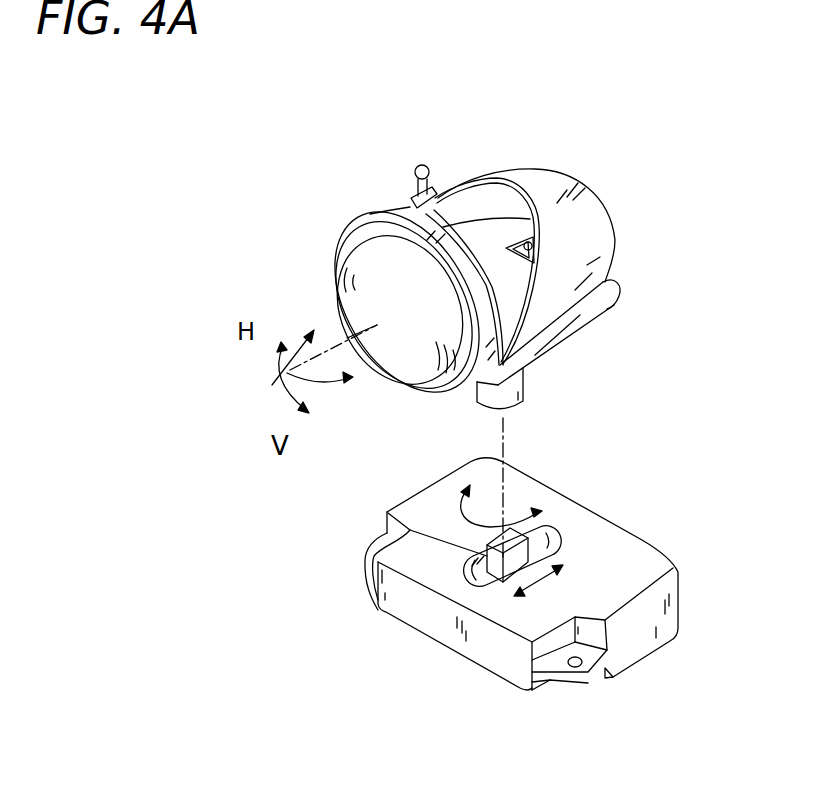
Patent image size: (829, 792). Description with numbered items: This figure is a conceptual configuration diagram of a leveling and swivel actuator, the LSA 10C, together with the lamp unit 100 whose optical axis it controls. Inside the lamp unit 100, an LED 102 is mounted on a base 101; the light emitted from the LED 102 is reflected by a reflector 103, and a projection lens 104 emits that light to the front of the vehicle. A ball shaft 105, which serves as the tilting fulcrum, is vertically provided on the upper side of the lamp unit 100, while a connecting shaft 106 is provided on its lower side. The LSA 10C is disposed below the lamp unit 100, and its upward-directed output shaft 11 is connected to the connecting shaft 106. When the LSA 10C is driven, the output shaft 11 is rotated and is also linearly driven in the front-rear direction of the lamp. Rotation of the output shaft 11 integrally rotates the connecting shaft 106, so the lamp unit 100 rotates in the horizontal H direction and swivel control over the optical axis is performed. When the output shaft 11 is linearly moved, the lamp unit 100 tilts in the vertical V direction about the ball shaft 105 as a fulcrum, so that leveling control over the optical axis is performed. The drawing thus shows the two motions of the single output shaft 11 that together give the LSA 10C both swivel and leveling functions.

The lamp unit 100 is at (548, 166).
The base 101 is at (573, 320).
The LED 102 is at (538, 242).
The reflector 103 is at (587, 213).
The projection lens 104 is at (416, 362).
The ball shaft 105 is at (423, 164).
The connecting shaft 106 is at (524, 393).
The LSA (leveling and swivel actuator) 10C is at (640, 527).
The output shaft 11 is at (387, 525).